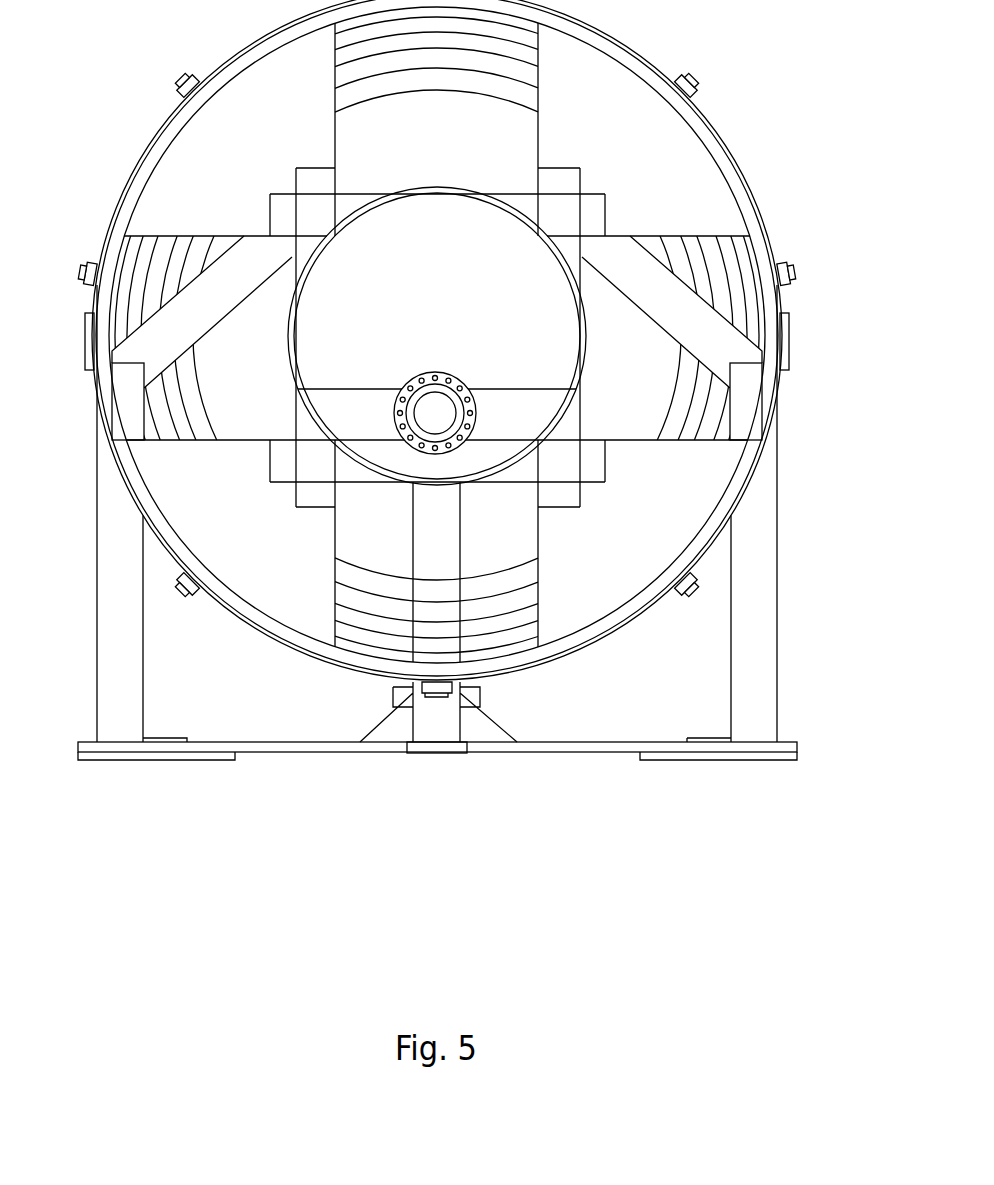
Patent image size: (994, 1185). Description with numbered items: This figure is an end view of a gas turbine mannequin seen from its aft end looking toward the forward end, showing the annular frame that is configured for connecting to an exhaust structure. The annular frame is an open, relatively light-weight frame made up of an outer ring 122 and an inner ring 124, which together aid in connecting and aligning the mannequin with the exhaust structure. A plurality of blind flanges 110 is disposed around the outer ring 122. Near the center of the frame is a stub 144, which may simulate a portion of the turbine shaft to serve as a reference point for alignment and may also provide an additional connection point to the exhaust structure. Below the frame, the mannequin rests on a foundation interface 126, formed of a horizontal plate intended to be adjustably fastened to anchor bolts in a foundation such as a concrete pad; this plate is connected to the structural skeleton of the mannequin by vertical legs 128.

The blind flanges 110 is at (188, 88).
The outer ring 122 is at (712, 160).
The inner ring 124 is at (578, 363).
The foundation interface 126 is at (280, 752).
The vertical legs 128 is at (113, 683).
The stub 144 is at (432, 378).